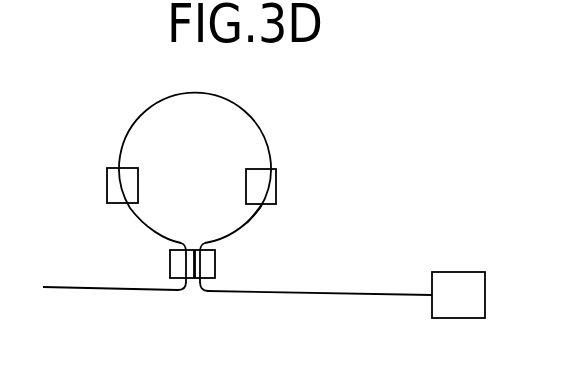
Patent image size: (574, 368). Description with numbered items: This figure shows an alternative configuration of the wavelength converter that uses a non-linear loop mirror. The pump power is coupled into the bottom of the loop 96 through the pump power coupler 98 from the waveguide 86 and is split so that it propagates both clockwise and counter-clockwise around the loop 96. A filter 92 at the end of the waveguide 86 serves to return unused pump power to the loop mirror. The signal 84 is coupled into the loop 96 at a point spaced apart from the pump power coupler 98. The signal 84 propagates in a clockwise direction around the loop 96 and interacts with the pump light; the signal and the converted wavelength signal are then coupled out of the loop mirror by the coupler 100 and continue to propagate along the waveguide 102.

The signal 84 is at (107, 186).
The optical fiber bus 86 is at (71, 291).
The filter 92 is at (462, 272).
The loop 96 is at (259, 125).
The optical coupler 98 is at (215, 258).
The coupler 100 is at (276, 185).
The waveguide 102 is at (262, 205).